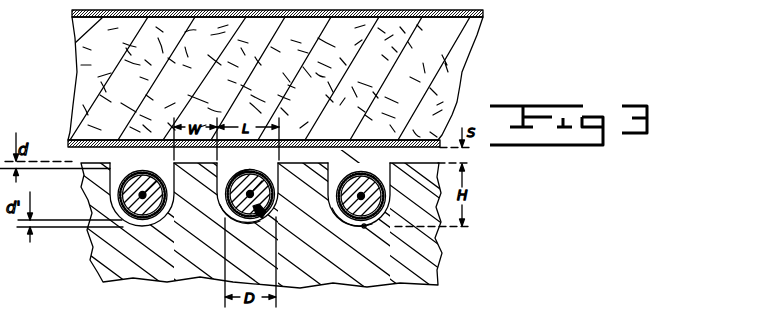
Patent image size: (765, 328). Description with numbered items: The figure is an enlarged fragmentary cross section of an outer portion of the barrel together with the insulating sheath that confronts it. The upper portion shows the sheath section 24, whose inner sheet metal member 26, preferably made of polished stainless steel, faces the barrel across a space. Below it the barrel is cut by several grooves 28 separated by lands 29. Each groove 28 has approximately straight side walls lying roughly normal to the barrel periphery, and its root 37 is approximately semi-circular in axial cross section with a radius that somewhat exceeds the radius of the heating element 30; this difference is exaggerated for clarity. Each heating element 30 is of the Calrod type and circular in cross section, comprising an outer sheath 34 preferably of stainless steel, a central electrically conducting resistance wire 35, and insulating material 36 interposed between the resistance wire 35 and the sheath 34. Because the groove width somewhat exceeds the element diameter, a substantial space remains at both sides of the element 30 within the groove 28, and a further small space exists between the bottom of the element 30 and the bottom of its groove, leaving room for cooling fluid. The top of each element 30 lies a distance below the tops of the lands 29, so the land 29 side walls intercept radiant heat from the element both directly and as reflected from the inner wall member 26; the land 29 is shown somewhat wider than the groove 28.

The semi-cylindrical section 24 is at (477, 55).
The inner sheet metal member 26 is at (69, 141).
The groove 28 is at (172, 162).
The land 29 is at (93, 171).
The heating element 30 is at (143, 221).
The sheath 34 is at (127, 174).
The resistance wire 35 is at (258, 219).
The insulating material 36 is at (246, 173).
The root 37 is at (240, 223).